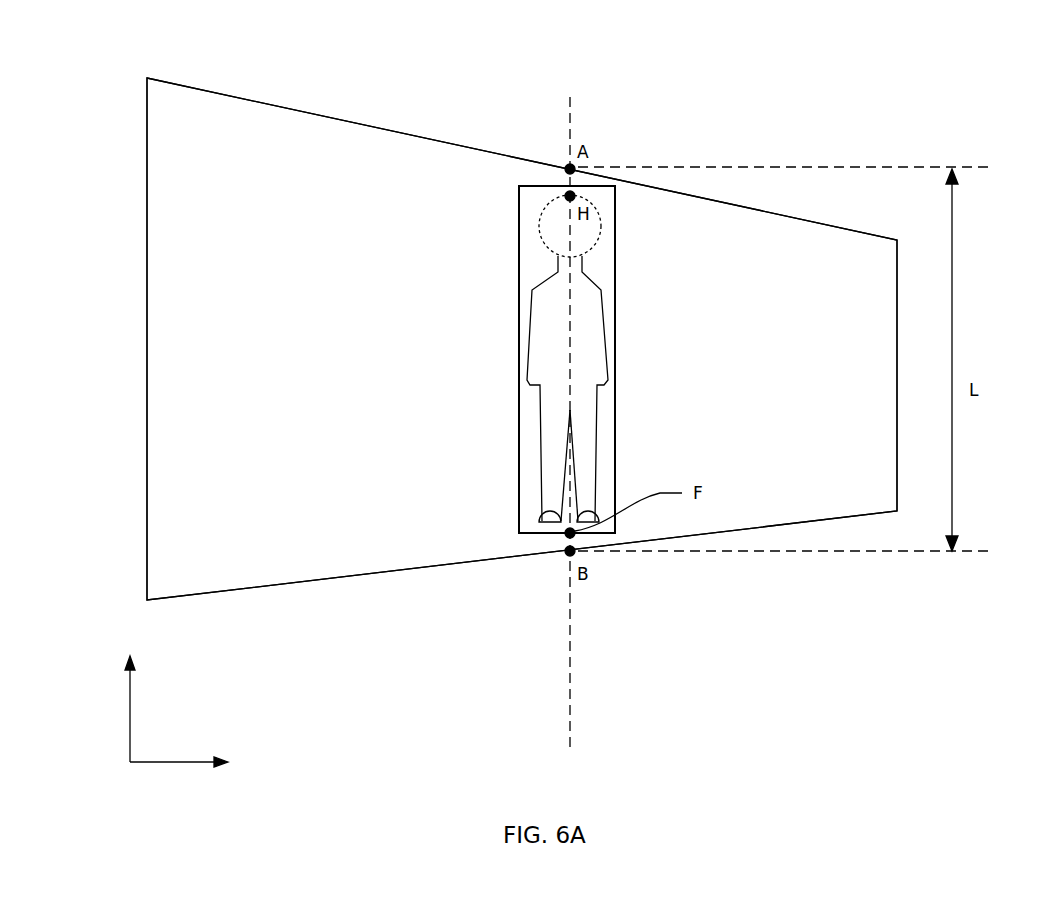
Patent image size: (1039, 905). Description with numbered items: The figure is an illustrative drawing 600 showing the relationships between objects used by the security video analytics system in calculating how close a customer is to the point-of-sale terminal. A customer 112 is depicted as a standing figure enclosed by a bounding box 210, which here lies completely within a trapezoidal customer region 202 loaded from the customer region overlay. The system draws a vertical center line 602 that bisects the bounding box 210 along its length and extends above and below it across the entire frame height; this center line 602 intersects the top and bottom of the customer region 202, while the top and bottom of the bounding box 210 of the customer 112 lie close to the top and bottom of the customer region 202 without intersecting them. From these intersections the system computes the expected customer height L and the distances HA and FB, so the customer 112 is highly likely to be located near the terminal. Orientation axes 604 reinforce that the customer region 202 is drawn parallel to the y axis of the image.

The illustrative drawing 600 is at (204, 62).
The customer region 202 is at (522, 339).
The center line 602 is at (566, 641).
The bounding box 210 is at (616, 260).
The customer 112 is at (538, 333).
The orientation axes 604 is at (128, 741).